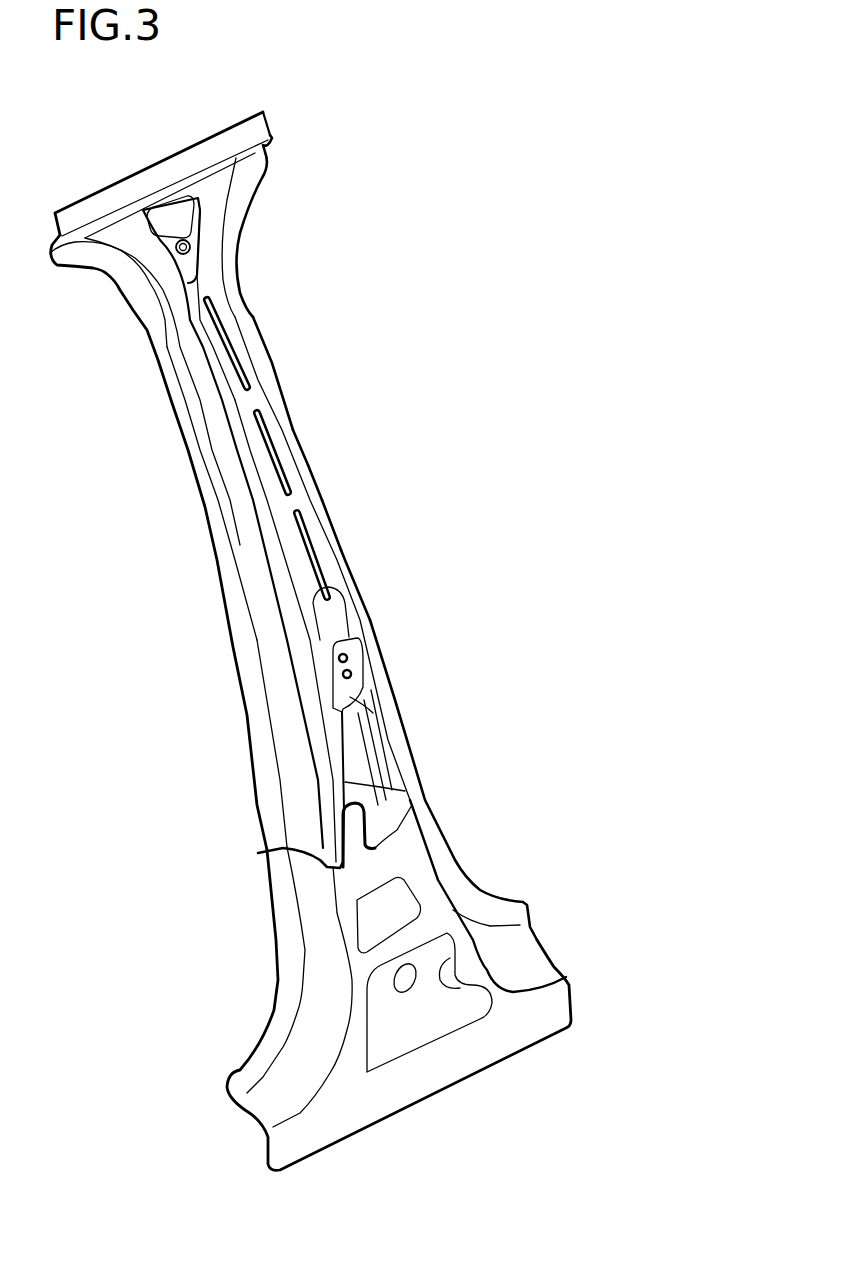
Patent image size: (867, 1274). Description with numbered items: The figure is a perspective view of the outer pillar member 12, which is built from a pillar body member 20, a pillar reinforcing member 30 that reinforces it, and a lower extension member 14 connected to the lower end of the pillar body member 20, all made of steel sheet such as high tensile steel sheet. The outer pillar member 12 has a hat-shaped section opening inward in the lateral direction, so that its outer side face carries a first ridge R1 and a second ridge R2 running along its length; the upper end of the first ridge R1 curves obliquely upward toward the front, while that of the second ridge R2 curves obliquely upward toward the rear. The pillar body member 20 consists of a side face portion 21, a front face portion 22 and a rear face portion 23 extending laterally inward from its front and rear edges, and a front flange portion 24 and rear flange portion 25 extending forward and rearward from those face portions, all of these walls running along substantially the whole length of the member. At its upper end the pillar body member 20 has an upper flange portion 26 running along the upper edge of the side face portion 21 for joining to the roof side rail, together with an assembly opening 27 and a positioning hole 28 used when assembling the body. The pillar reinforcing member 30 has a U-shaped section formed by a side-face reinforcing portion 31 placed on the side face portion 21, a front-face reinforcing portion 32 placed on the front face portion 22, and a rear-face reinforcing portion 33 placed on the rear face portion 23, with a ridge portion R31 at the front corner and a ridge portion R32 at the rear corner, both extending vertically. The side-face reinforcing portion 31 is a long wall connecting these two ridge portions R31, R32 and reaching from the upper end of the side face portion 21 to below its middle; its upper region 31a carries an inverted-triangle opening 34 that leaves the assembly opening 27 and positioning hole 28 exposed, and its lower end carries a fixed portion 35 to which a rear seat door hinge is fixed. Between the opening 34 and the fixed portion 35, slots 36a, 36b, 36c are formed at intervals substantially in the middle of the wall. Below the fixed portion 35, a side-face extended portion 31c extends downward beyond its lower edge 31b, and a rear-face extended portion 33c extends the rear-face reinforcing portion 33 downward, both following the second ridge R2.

The outer pillar member 12 is at (467, 210).
The lower extension member 14 is at (323, 973).
The pillar body member 20 is at (240, 670).
The side face portion 21 is at (357, 747).
The front face portion 22 is at (380, 693).
The rear face portion 23 is at (283, 720).
The front flange portion 24 is at (333, 510).
The rear flange portion 25 is at (228, 538).
The upper flange portion 26 is at (172, 172).
The assembly opening 27 is at (175, 225).
The positioning hole 28 is at (175, 250).
The pillar reinforcing member 30 is at (343, 557).
The side-face reinforcing portion 31 is at (260, 392).
The upper portion of inner reinforcement 31a is at (218, 183).
The lower edge 31b is at (347, 703).
The side-face extended portion 31c is at (340, 790).
The front-face reinforcing portion 32 is at (293, 437).
The rear-face reinforcing portion 33 is at (240, 428).
The rear-face extended portion 33c is at (313, 800).
The opening 34 is at (200, 257).
The fixed portion 35 is at (348, 650).
The slot 36a is at (212, 325).
The slot 36b is at (245, 467).
The slot 36c is at (308, 557).
The first ridge R1 is at (253, 330).
The second ridge R2 is at (210, 363).
The ridge portion R31 is at (312, 472).
The ridge portion R32 is at (303, 610).